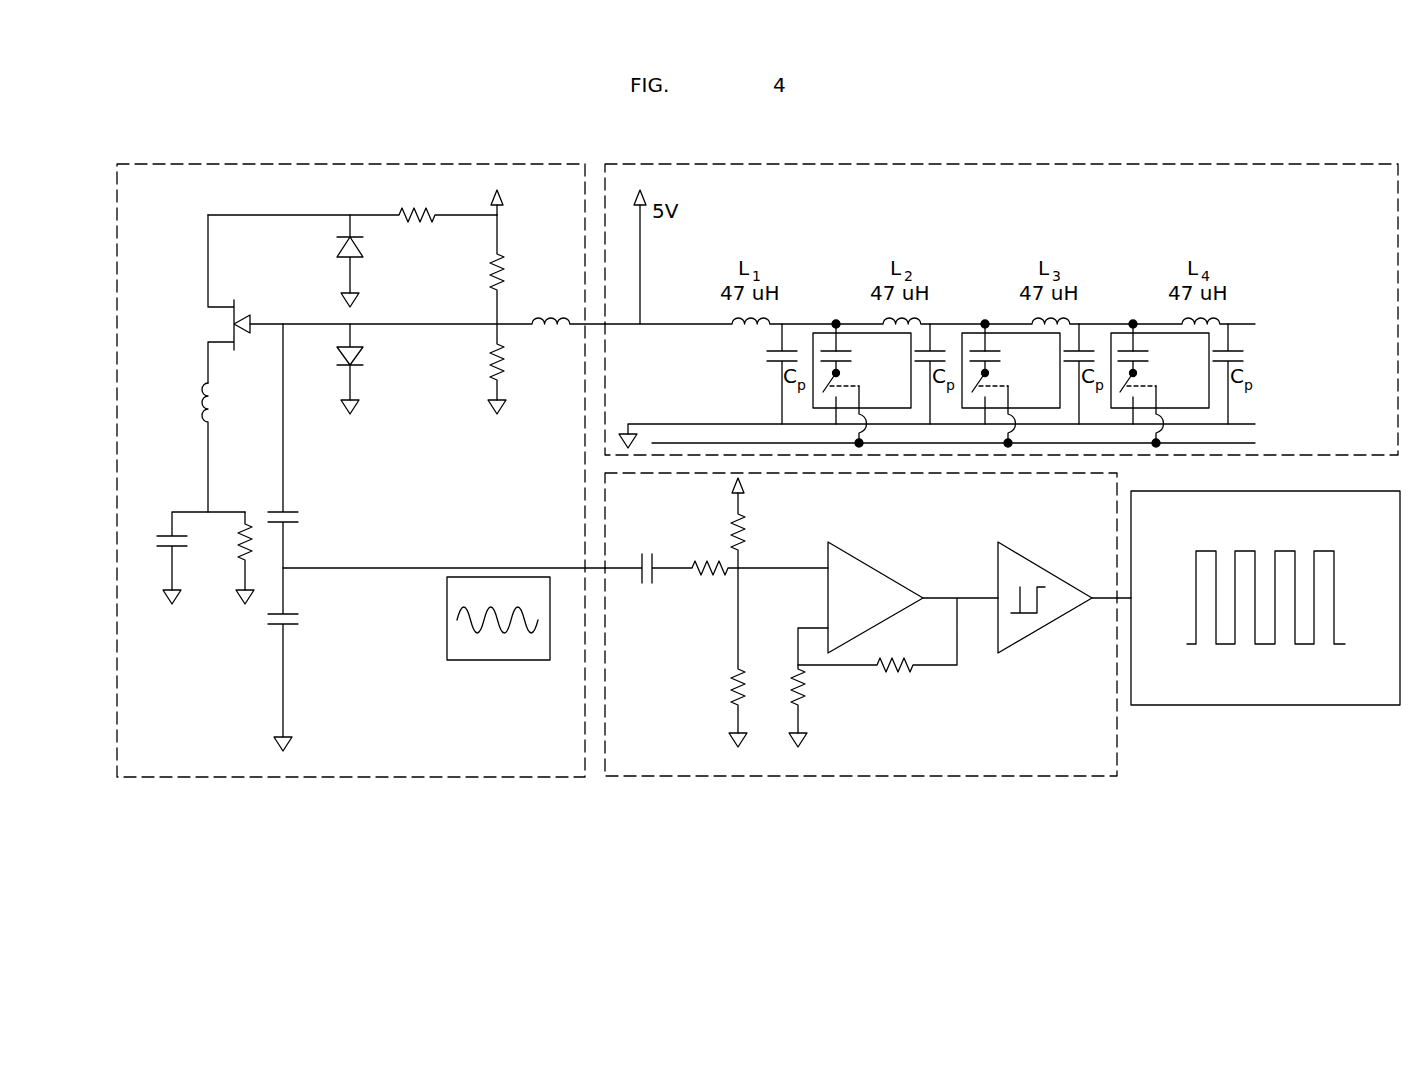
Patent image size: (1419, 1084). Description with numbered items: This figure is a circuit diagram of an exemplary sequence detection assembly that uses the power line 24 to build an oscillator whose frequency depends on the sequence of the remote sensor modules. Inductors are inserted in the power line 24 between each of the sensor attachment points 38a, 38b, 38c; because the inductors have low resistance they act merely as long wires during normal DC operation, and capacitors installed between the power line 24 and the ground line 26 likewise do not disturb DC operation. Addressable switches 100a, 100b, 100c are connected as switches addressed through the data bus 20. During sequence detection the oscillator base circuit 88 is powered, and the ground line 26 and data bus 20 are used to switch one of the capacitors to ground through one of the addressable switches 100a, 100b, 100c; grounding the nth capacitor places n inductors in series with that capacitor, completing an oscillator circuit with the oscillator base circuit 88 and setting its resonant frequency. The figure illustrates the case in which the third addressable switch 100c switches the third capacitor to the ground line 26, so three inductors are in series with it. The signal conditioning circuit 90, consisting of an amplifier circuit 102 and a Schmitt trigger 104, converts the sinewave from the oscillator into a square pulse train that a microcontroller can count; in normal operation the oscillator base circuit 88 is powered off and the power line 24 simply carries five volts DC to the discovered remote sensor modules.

The oscillator base circuit 88 is at (232, 164).
The power line 24 is at (678, 324).
The ground line 26 is at (688, 424).
The data bus 20 is at (755, 443).
The sensor attachment point 38a is at (836, 322).
The sensor attachment point 38b is at (985, 322).
The sensor attachment point 38c is at (1133, 322).
The addressable switch 100a is at (858, 333).
The addressable switch 100b is at (1007, 333).
The addressable switch 100c is at (1156, 333).
The amplifier circuit 102 is at (892, 548).
The Schmitt trigger 104 is at (1048, 628).
The signal conditioning circuit 90 is at (1117, 743).